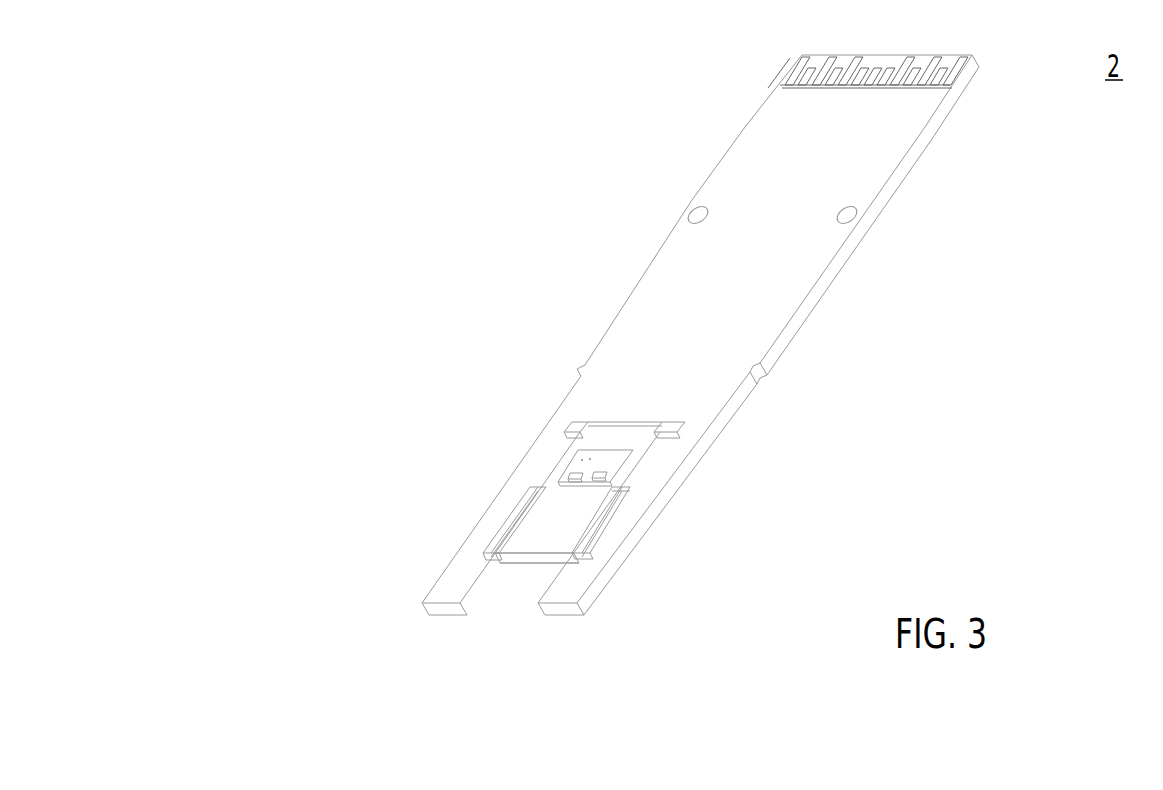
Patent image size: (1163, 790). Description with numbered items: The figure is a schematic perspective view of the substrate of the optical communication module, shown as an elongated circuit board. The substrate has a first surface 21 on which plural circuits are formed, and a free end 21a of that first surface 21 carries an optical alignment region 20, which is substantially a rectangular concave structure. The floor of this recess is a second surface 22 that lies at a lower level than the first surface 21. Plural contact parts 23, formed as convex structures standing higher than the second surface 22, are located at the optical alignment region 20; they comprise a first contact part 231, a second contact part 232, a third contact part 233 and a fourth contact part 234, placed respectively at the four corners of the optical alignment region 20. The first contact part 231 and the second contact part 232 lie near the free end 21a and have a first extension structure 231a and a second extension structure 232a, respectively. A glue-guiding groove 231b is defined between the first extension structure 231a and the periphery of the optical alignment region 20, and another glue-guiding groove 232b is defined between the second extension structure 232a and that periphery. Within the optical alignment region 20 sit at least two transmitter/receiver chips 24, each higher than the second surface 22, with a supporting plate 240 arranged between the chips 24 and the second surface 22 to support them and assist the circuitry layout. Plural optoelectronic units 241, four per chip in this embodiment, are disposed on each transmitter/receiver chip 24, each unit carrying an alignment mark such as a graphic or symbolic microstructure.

The optical alignment region 20 is at (603, 435).
The first surface 21 is at (788, 276).
The free end 21a is at (527, 573).
The second surface 22 is at (555, 537).
The contact parts 23 is at (304, 272).
The first contact part 231 is at (588, 545).
The first extension structure 231a is at (615, 518).
The glue-guiding groove 231b is at (630, 502).
The second contact part 232 is at (488, 542).
The second extension structure 232a is at (540, 498).
The glue-guiding groove 232b is at (517, 505).
The third contact part 233 is at (667, 422).
The fourth contact part 234 is at (573, 425).
The transmitter/receiver chips 24 is at (612, 470).
The supporting plate 240 is at (584, 474).
The optoelectronic units 241 is at (607, 477).